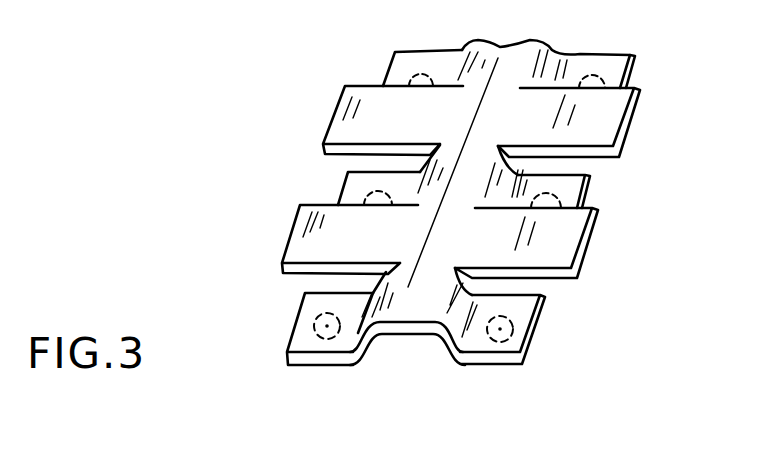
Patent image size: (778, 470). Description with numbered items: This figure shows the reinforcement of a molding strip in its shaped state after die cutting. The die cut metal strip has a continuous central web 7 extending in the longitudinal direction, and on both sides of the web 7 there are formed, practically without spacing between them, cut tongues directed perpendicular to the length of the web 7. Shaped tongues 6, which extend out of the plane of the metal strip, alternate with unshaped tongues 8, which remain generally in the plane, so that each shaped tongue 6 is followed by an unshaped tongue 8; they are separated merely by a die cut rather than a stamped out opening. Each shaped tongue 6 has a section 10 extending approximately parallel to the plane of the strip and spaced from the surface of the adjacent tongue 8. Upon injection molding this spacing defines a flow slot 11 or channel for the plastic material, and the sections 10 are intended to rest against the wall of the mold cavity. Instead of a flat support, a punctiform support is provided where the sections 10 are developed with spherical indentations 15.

The shaped tongue 6 is at (398, 54).
The central web 7 is at (418, 305).
The unshaped tongue 8 is at (612, 122).
The section 10 is at (336, 372).
The flow slot 11 is at (333, 288).
The spherical indentation 15 is at (617, 42).